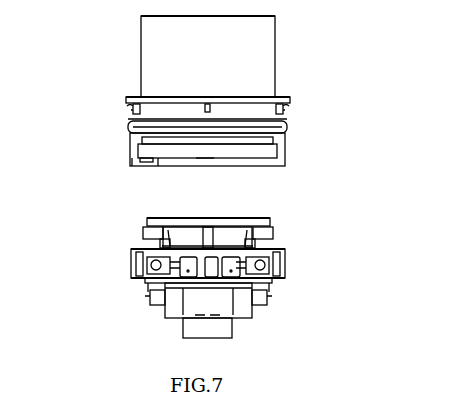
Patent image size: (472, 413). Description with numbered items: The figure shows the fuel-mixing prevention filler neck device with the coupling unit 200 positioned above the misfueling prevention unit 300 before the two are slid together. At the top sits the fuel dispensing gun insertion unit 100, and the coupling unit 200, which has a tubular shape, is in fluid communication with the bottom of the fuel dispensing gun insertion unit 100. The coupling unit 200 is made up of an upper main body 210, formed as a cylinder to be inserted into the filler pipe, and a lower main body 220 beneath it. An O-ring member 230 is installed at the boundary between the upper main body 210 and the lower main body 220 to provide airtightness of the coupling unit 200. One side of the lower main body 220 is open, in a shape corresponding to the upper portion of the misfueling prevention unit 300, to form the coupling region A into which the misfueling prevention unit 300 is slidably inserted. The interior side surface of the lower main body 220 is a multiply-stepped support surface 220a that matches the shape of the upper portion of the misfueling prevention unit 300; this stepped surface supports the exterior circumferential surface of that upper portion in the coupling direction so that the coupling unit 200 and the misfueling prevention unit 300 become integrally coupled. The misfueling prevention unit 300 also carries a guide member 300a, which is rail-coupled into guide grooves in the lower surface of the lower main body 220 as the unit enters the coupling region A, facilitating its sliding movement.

The fuel dispensing gun insertion unit 100 is at (275, 53).
The coupling unit 200 is at (56, 106).
The upper main body 210 is at (130, 108).
The lower main body 220 is at (171, 173).
The multiply-stepped support surface 220a is at (155, 162).
The O-ring member 230 is at (287, 123).
The coupling region A is at (204, 160).
The misfueling prevention unit 300 is at (207, 268).
The guide member 300a is at (133, 249).